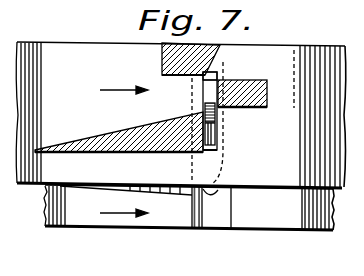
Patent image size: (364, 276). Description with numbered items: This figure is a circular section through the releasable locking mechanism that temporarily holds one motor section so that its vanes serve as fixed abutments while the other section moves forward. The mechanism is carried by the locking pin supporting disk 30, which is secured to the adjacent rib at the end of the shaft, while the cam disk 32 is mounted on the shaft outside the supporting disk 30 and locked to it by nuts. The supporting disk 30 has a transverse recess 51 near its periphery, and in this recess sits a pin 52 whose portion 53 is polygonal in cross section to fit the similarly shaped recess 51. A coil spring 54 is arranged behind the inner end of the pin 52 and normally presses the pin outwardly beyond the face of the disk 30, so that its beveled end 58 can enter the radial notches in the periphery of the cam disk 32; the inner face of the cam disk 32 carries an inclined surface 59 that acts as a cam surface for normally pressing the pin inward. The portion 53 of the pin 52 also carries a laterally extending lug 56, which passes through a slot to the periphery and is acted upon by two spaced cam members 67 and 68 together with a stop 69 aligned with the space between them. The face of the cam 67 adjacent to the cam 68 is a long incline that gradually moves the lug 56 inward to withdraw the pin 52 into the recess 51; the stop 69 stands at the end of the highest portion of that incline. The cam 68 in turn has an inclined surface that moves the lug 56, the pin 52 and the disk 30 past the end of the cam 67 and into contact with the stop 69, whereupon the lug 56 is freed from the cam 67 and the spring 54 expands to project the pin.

The locking pin supporting disk 30 is at (255, 57).
The cam disk 32 is at (85, 213).
The transverse recess 51 is at (220, 216).
The pin 52 is at (216, 134).
The polygonal portion of the pin 53 is at (216, 117).
The coil spring 54 is at (221, 65).
The laterally extending lug 56 is at (206, 88).
The beveled end of the pin 58 is at (266, 208).
The beveled or inclined surface 59 is at (182, 196).
The cam member 67 is at (118, 151).
The cam member 68 is at (162, 52).
The stop 69 is at (268, 91).